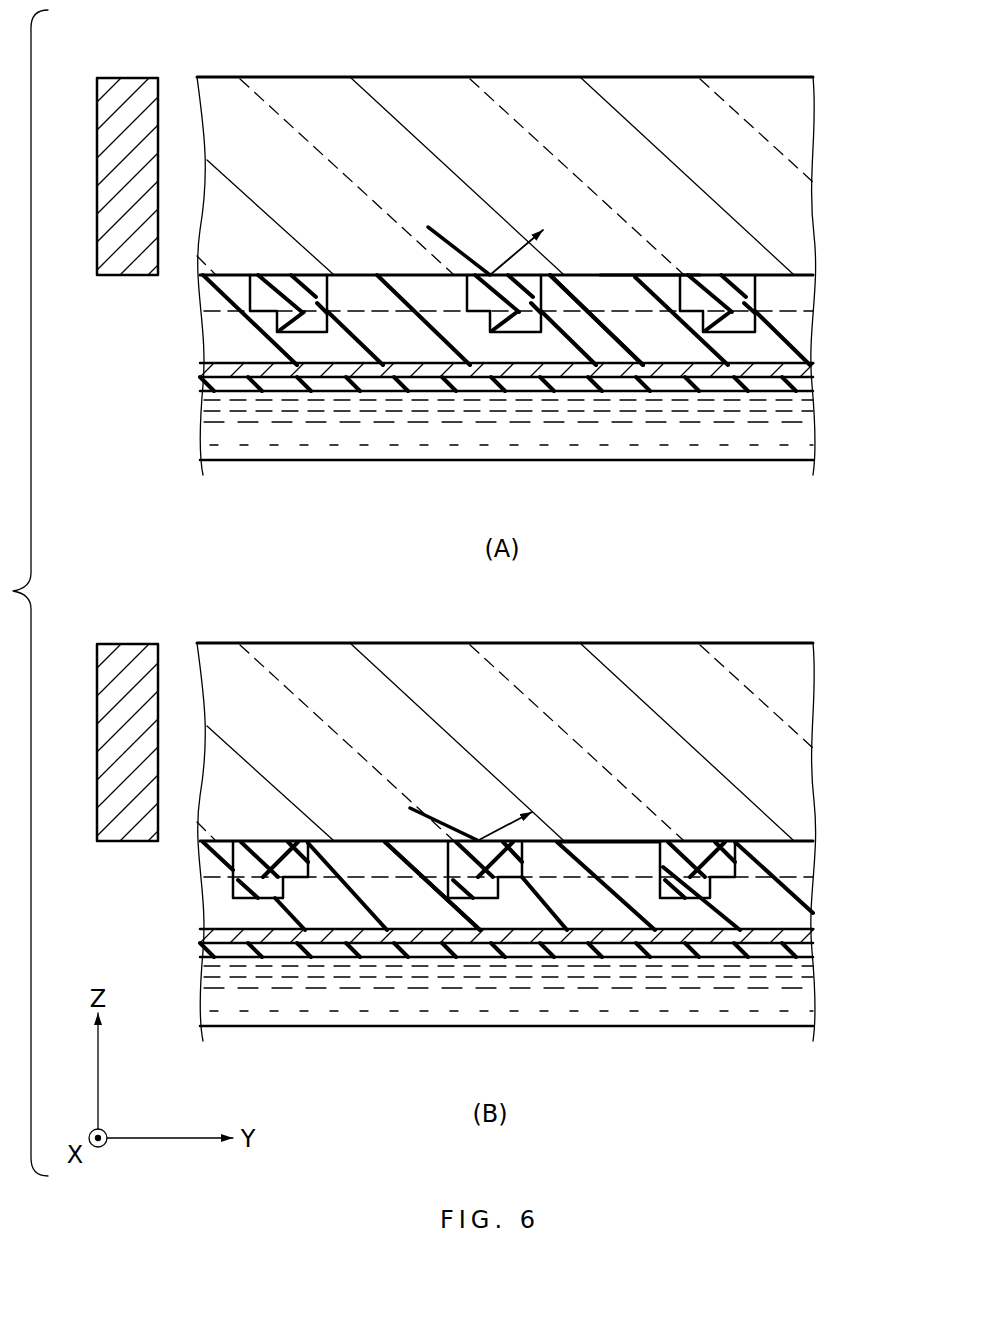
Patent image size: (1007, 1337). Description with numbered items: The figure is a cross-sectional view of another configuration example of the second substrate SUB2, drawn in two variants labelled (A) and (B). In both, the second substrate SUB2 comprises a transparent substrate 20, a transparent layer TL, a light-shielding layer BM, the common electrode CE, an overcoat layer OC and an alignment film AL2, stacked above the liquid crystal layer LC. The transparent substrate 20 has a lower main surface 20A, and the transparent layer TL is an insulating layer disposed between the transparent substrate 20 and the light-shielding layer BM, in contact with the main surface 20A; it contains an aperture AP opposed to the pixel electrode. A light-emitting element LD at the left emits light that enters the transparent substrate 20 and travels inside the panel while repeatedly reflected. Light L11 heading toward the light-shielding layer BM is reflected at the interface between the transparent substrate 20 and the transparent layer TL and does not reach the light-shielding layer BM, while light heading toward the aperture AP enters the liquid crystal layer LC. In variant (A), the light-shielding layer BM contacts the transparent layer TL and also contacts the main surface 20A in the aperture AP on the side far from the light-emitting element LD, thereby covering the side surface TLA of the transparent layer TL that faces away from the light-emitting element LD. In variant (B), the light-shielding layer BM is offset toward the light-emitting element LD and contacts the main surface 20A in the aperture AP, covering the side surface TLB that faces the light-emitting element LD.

The second substrate SUB2 is at (748, 73).
The transparent substrate 20 is at (813, 240).
The main surface 20A is at (634, 286).
The light-emitting element LD is at (131, 278).
The overcoat layer OC is at (813, 339).
The common electrode CE is at (813, 366).
The alignment film AL2 is at (800, 386).
The liquid crystal layer LC is at (800, 438).
The light-shielding layer BM is at (508, 325).
The transparent layer TL is at (485, 295).
The side surface TLA is at (534, 294).
The side surface TLB is at (452, 862).
The light L11 is at (455, 238).
The aperture AP is at (403, 312).